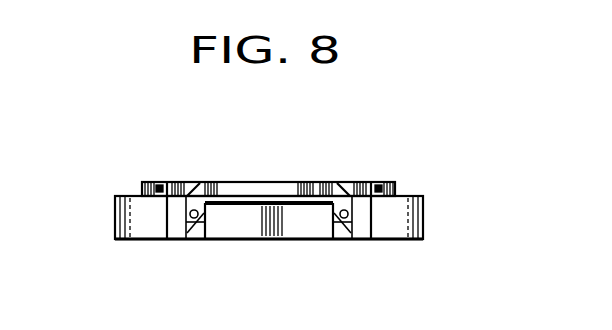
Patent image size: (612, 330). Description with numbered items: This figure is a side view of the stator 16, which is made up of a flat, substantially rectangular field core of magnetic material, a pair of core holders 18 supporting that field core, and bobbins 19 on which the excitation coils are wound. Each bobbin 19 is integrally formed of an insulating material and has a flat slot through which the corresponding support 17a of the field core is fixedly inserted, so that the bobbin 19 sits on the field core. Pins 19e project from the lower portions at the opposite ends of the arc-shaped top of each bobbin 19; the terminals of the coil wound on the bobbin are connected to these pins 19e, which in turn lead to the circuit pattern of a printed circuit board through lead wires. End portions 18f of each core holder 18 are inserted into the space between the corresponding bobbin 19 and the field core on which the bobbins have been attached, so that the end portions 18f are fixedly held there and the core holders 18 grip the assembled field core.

The stator 16 is at (296, 176).
The support 17a is at (252, 222).
The core holder 18 is at (113, 213).
The end portion 18f is at (195, 234).
The bobbin 19 is at (236, 178).
The pin 19e is at (158, 182).